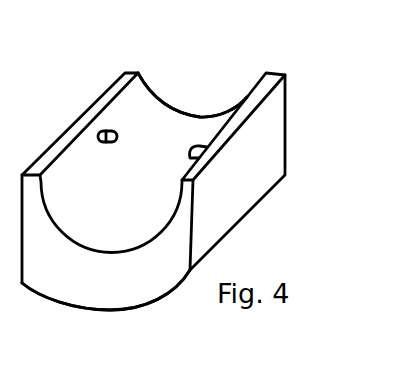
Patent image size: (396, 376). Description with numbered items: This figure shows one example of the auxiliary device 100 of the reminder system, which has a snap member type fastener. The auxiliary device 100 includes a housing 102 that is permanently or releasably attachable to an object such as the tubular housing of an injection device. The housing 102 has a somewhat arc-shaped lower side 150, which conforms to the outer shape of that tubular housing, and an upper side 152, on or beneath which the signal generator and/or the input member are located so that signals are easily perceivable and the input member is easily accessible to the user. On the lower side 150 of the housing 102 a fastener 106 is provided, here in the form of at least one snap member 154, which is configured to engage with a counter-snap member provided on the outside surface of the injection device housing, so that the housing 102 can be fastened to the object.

The auxiliary device 100 is at (197, 193).
The housing 102 is at (267, 153).
The fastener 106 is at (121, 110).
The lower side 150 is at (207, 122).
The upper side 152 is at (147, 303).
The snap member 154 is at (103, 130).